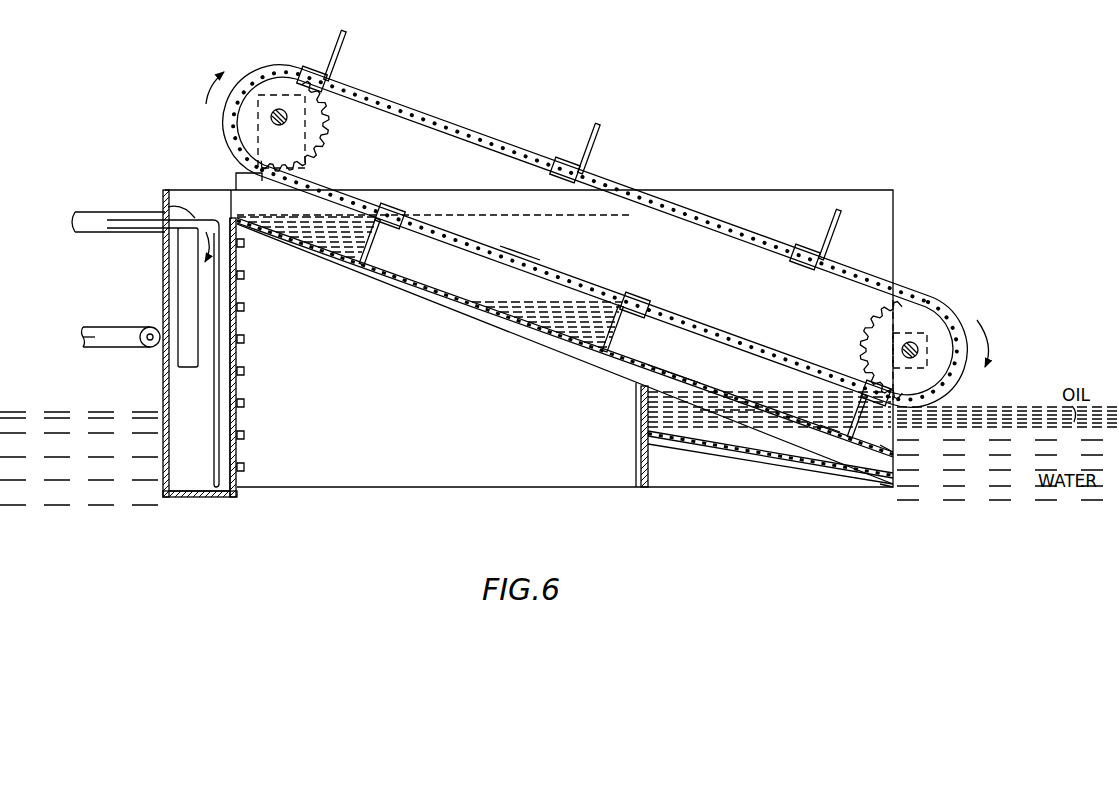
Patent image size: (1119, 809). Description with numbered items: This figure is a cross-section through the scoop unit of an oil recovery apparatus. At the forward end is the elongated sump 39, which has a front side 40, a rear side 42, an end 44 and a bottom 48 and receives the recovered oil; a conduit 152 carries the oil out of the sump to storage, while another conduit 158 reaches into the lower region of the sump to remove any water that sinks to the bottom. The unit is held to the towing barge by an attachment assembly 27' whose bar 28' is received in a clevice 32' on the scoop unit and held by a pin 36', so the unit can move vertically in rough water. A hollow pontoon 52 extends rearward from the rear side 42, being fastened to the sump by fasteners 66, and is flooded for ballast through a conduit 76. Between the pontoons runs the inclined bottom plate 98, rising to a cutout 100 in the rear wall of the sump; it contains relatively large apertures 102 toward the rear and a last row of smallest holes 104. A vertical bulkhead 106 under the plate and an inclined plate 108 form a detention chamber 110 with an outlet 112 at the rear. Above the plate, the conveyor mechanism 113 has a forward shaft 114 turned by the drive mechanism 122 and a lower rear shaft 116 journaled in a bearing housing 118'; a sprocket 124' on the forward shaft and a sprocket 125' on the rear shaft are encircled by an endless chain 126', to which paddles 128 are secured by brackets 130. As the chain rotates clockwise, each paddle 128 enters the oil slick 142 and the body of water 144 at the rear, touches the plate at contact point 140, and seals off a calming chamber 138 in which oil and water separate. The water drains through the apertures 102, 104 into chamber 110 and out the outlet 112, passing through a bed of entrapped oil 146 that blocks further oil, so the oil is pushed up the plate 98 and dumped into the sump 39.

The attachment assembly 27' is at (114, 313).
The bar 28' is at (63, 351).
The clevice 32' is at (148, 321).
The pin or nut and bolt assembly 36' is at (143, 360).
The sump 39 is at (181, 204).
The front side 40 is at (163, 467).
The rear side 42 is at (243, 331).
The end 44 is at (185, 440).
The bottom 48 is at (232, 497).
The pontoon 52 is at (744, 189).
The fasteners 66 is at (243, 286).
The conduit 76 is at (246, 178).
The bottom plate 98 is at (460, 303).
The cutout 100 is at (227, 212).
The apertures 102 is at (823, 442).
The smallest holes 104 is at (679, 380).
The vertical bulkhead 106 is at (636, 470).
The inclined plate 108 is at (698, 440).
The detention chamber 110 is at (756, 446).
The outlet 112 is at (893, 482).
The conveyor mechanism 113 is at (619, 236).
The forward shaft 114 is at (280, 109).
The rear shaft 116 is at (918, 357).
The bearing housing 118' is at (921, 332).
The drive mechanism 122 is at (257, 132).
The sprocket 124' is at (325, 126).
The sprocket 125' is at (864, 345).
The endless chain 126' is at (595, 236).
The paddles or blades 128 is at (603, 148).
The brackets 130 is at (401, 211).
The calming or separation chamber 138 is at (730, 343).
The contact point 140 is at (893, 441).
The oil slick 142 is at (787, 390).
The body of water 144 is at (828, 423).
The entrapped oil 146 is at (707, 418).
The conduit 152 is at (100, 214).
The conduit 158 is at (133, 225).